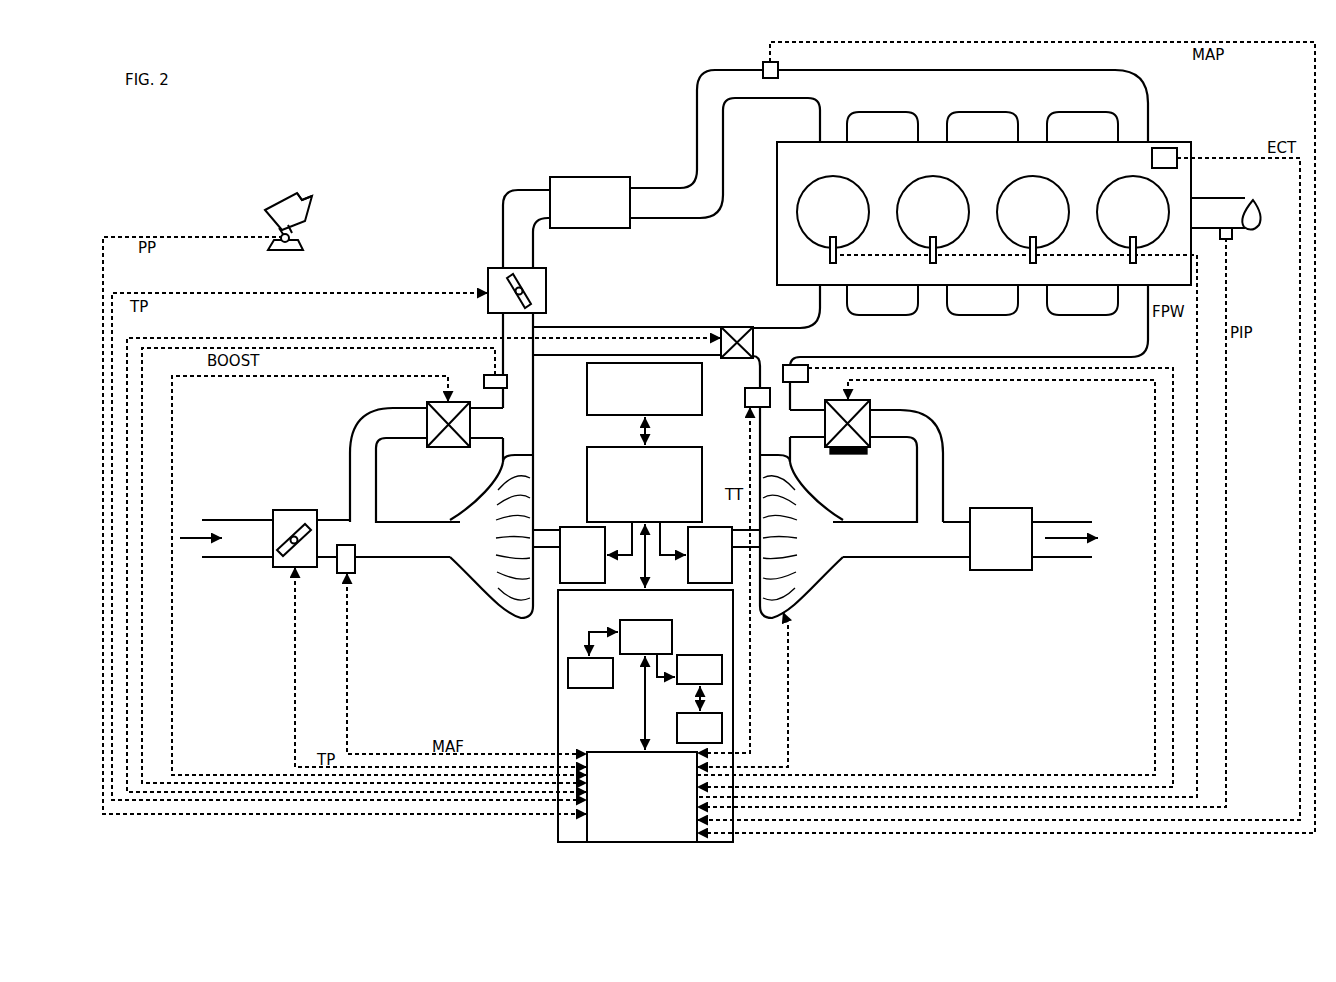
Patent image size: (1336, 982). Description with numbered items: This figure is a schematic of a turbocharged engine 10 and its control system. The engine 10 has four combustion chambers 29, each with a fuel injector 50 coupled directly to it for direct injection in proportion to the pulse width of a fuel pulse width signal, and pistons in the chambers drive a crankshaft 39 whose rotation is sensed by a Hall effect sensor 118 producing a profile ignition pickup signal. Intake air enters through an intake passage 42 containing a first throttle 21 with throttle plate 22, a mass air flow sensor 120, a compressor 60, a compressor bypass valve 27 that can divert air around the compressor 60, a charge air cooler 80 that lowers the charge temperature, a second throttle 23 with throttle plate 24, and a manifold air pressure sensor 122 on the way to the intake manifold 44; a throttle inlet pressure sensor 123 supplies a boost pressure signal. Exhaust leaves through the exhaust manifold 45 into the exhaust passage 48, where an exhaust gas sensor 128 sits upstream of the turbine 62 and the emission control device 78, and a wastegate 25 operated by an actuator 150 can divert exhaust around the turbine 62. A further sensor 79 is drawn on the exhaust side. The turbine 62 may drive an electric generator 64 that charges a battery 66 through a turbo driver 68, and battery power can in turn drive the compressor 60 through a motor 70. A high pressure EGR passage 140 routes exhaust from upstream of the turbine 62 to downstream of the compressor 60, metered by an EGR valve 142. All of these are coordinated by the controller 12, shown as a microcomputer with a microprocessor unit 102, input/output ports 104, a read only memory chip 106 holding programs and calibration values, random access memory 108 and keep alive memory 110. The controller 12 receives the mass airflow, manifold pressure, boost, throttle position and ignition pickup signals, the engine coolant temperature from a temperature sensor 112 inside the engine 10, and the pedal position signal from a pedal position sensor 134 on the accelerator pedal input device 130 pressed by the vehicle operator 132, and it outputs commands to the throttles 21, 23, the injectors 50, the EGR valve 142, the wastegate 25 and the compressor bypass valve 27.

The engine 10 is at (984, 213).
The controller 12 is at (611, 716).
The throttle 21 is at (292, 510).
The throttle plate 22 is at (303, 520).
The throttle 23 is at (490, 270).
The throttle plate 24 is at (532, 297).
The wastegate 25 is at (870, 410).
The compressor bypass valve 27 is at (427, 410).
The combustion chamber 29 is at (983, 212).
The crankshaft 39 is at (1232, 198).
The intake passage 42 is at (315, 538).
The intake manifold 44 is at (963, 106).
The exhaust manifold 45 is at (950, 347).
The exhaust passage 48 is at (970, 539).
The fuel injector 50 is at (828, 262).
The compressor 60 is at (492, 580).
The turbine 62 is at (798, 495).
The electric generator 64 is at (710, 555).
The battery 66 is at (587, 398).
The turbo driver 68 is at (690, 447).
The motor 70 is at (582, 555).
The emission control device 78 is at (1001, 539).
The exhaust temperature sensor 79 is at (748, 396).
The charge air cooler 80 is at (562, 177).
The microprocessor unit 102 is at (600, 631).
The input/output ports 104 is at (642, 749).
The read only memory chip 106 is at (568, 676).
The random access memory 108 is at (690, 655).
The keep alive memory 110 is at (677, 725).
The temperature sensor 112 is at (1170, 148).
The Hall effect sensor 118 is at (1232, 238).
The mass air flow sensor 120 is at (355, 572).
The manifold air pressure sensor 122 is at (763, 64).
The throttle inlet pressure sensor 123 is at (486, 378).
The exhaust gas sensor 128 is at (808, 382).
The input device 130 is at (272, 215).
The vehicle operator 132 is at (313, 200).
The pedal position sensor 134 is at (300, 240).
The EGR passage 140 is at (626, 333).
The EGR valve 142 is at (740, 327).
The actuator 150 is at (858, 454).